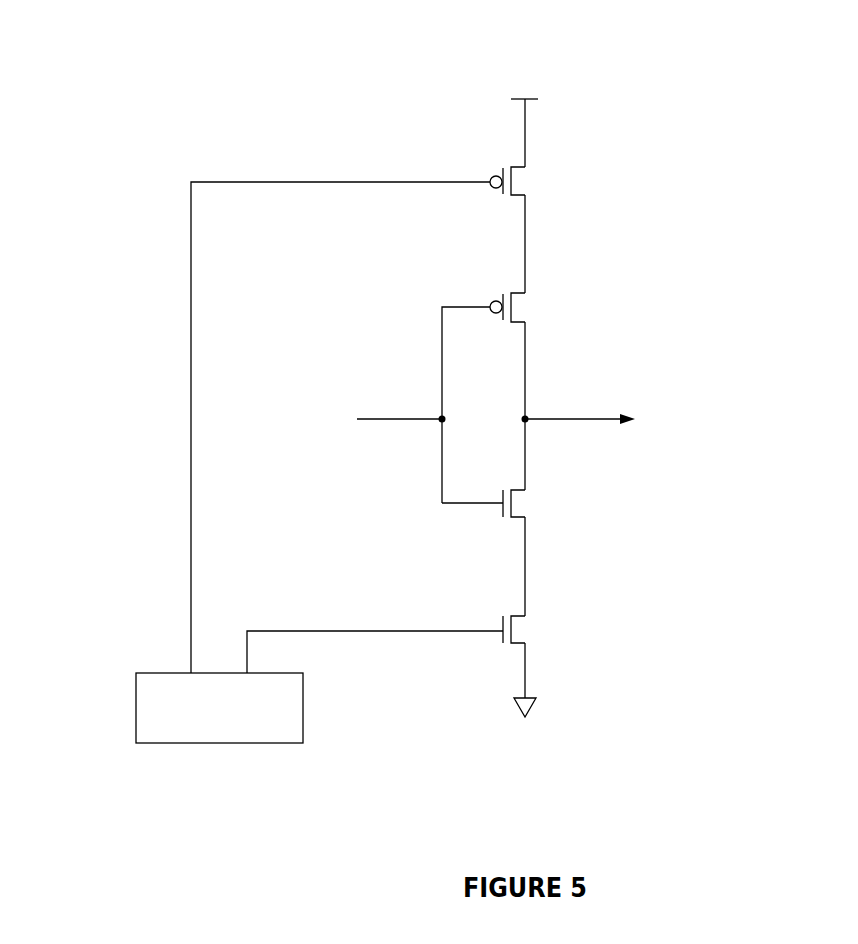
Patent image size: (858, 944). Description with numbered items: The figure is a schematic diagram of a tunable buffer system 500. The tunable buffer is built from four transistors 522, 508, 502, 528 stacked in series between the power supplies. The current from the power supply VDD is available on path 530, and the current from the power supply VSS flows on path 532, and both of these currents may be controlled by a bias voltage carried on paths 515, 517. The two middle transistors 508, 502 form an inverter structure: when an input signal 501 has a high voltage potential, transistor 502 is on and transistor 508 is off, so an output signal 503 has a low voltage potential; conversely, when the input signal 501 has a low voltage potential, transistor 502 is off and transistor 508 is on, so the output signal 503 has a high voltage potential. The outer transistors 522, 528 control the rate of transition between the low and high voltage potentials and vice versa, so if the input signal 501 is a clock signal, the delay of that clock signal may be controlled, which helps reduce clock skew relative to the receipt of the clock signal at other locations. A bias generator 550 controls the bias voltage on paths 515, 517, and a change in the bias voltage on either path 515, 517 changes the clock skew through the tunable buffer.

The tunable buffer system 500 is at (771, 88).
The input signal 501 is at (400, 419).
The transistor 502 is at (502, 517).
The output signal 503 is at (580, 419).
The transistor 508 is at (502, 322).
The path 515 is at (305, 182).
The path 517 is at (305, 631).
The transistor 522 is at (502, 194).
The transistor 528 is at (502, 644).
The path 530 is at (526, 260).
The path 532 is at (525, 594).
The bias generator 550 is at (136, 686).